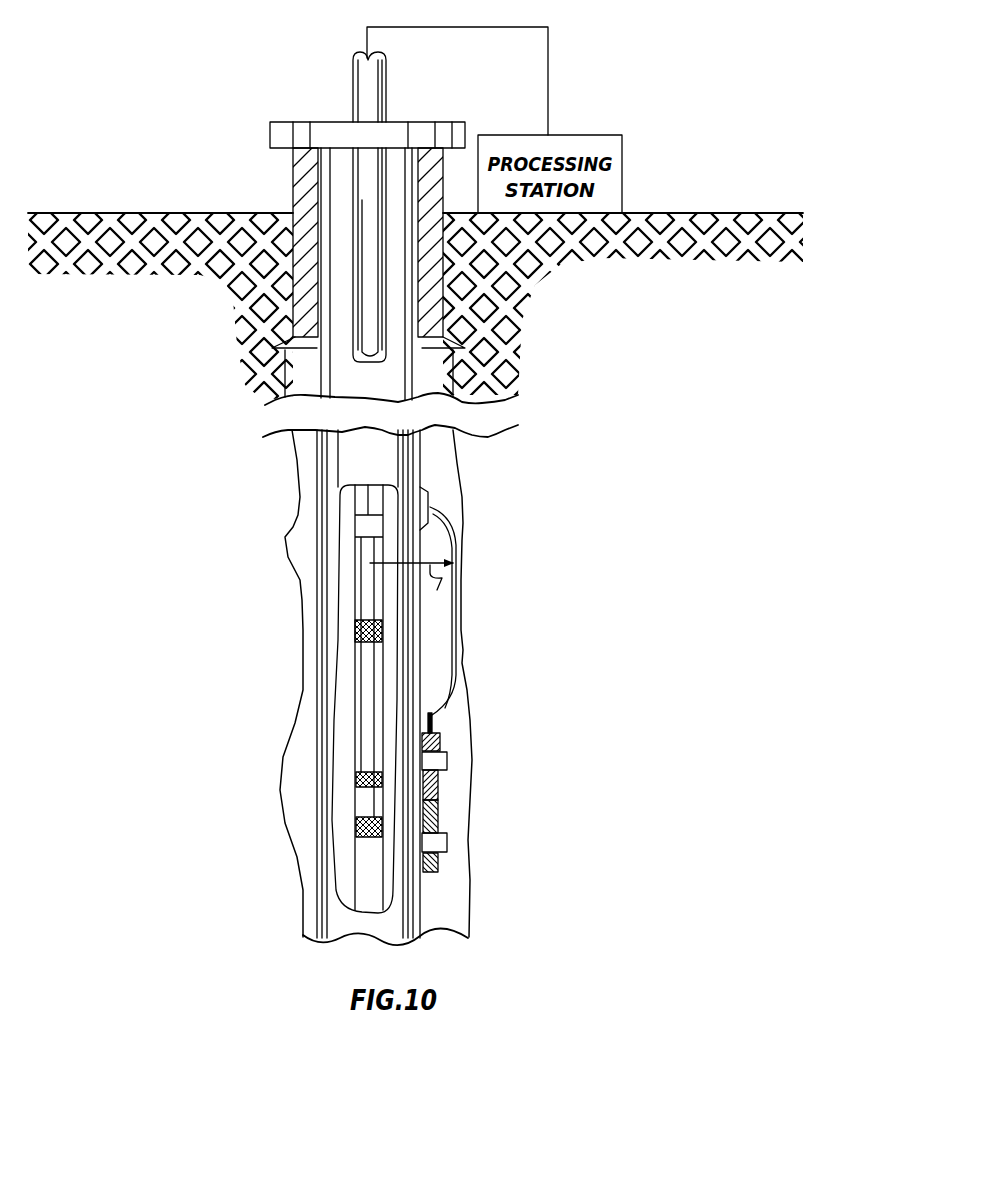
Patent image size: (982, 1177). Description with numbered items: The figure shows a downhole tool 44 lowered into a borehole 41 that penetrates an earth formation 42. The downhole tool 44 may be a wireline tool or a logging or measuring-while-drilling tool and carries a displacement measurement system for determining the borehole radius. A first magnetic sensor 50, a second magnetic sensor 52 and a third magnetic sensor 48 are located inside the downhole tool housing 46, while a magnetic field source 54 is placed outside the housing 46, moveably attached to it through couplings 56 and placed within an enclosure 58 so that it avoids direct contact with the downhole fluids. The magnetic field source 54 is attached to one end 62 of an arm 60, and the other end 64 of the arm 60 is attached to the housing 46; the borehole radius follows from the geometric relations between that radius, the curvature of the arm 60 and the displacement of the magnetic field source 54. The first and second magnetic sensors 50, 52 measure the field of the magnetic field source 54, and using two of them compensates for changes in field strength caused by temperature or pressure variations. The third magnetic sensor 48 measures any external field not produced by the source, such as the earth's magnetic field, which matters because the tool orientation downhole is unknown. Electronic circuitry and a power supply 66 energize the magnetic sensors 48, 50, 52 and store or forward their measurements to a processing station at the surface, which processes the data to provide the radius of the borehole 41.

The borehole 41 is at (293, 520).
The earth formation 42 is at (186, 238).
The downhole tool 44 is at (378, 461).
The downhole tool housing 46 is at (335, 766).
The third magnetic sensor 48 is at (355, 633).
The first magnetic sensor 50 is at (355, 780).
The second magnetic sensor 52 is at (355, 826).
The magnetic field source 54 is at (447, 742).
The couplings 56 is at (438, 762).
The enclosure 58 is at (448, 865).
The arm 60 is at (464, 650).
The one end of the arm 62 is at (445, 720).
The other end of the arm 64 is at (445, 508).
The electronic circuitry and power supply 66 is at (372, 528).